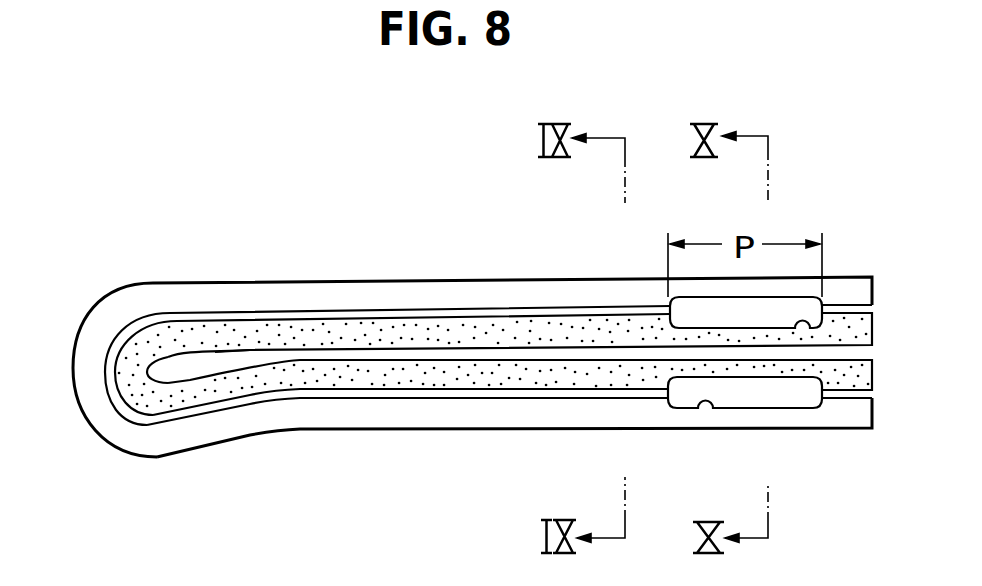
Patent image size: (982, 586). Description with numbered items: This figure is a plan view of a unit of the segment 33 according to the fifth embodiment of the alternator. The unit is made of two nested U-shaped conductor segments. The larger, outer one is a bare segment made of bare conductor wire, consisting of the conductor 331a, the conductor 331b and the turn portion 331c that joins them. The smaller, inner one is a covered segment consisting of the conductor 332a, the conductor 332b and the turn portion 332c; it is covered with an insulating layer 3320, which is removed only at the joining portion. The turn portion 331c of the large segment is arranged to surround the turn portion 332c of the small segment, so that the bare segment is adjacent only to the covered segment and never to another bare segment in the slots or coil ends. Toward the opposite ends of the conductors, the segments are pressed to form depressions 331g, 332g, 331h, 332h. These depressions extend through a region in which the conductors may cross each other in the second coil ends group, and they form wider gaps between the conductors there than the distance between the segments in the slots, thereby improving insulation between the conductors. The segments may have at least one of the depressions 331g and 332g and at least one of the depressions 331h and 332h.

The segment 33 is at (212, 242).
The insulating layer 3320 is at (245, 338).
The conductor 331a is at (373, 297).
The conductor 331b is at (363, 413).
The turn portion 331c is at (133, 435).
The conductor 332a is at (447, 340).
The conductor 332b is at (448, 363).
The turn portion 332c is at (123, 373).
The depression 331g is at (688, 300).
The depression 332g is at (818, 331).
The depression 331h is at (712, 408).
The depression 332h is at (792, 378).